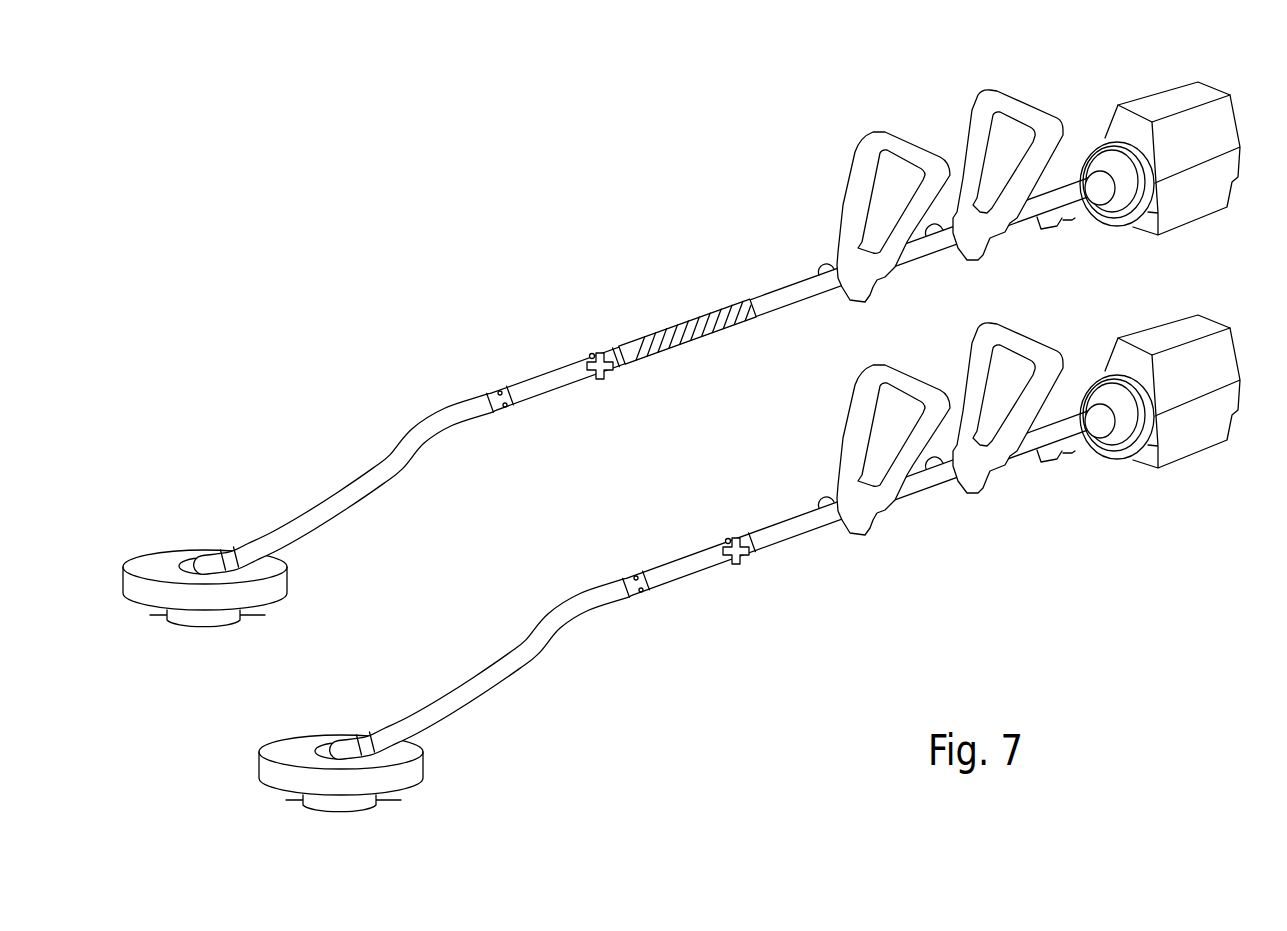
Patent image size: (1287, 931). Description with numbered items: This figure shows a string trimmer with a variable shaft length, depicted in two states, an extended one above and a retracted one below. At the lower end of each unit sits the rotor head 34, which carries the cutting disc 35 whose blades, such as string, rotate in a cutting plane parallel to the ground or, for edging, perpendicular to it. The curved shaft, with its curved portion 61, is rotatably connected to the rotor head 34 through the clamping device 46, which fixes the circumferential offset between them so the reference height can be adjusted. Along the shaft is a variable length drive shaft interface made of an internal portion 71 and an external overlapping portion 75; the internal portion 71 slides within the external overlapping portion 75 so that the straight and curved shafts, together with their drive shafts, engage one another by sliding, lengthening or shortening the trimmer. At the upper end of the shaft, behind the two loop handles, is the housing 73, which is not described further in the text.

The rotor head 34 is at (278, 592).
The cutting disc 35 is at (137, 597).
The clamping device 46 is at (352, 728).
The curved portion 61 is at (391, 475).
The internal portion 71 is at (690, 339).
The motor housing 73 is at (1218, 86).
The external overlapping portion 75 is at (706, 570).